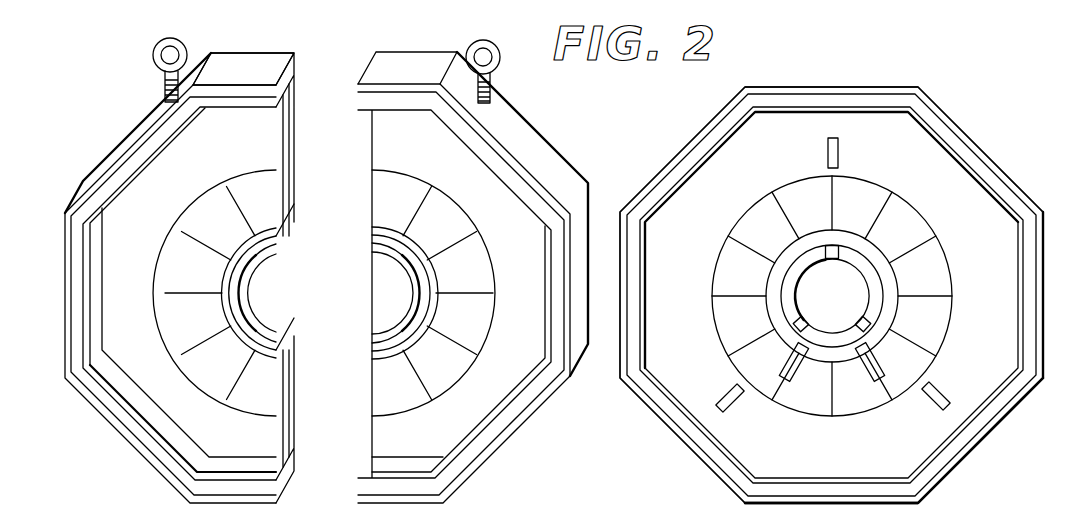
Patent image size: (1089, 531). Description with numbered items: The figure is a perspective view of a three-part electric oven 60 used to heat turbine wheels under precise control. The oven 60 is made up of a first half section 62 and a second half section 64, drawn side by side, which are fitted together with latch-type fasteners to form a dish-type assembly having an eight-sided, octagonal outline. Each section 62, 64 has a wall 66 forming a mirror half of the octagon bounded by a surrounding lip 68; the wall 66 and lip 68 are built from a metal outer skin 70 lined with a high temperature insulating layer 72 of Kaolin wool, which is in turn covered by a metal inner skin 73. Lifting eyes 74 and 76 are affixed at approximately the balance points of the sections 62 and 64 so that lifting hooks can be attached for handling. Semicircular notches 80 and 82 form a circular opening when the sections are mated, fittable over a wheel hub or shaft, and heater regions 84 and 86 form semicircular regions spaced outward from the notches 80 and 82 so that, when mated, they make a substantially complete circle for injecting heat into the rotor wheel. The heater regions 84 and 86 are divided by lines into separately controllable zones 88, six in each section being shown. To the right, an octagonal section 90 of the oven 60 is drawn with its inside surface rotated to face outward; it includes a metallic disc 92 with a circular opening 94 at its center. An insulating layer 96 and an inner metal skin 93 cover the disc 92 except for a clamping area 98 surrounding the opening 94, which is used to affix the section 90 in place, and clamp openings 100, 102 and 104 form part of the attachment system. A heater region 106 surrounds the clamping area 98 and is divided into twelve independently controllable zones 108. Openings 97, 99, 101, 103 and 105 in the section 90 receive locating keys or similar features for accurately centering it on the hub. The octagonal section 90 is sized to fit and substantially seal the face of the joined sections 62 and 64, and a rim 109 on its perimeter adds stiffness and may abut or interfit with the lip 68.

The electric oven 60 is at (982, 131).
The first 180-degree section 62 is at (243, 53).
The second 180-degree section 64 is at (411, 53).
The wall 66 is at (262, 120).
The lip 68 is at (273, 66).
The metal outer skin 70 is at (296, 135).
The insulating layer 72 is at (291, 154).
The metal inner skin 73 is at (284, 190).
The lifting eye 74 is at (152, 58).
The lifting eye 76 is at (508, 60).
The semicircular notch 80 is at (273, 310).
The semicircular notch 82 is at (415, 318).
The heater region 84 is at (167, 271).
The heater region 86 is at (470, 356).
The separately controllable zones 88 is at (215, 217).
The octagonal section 90 is at (698, 142).
The metallic disc 92 is at (1036, 276).
The inner metal skin 93 is at (1022, 328).
The circular opening 94 is at (798, 296).
The insulating layer 96 is at (1040, 357).
The opening 97 is at (869, 387).
The clamping area 98 is at (875, 290).
The opening 99 is at (790, 387).
The clamp opening 100 is at (833, 246).
The opening 101 is at (826, 146).
The clamp opening 102 is at (868, 320).
The opening 103 is at (950, 388).
The clamp opening 104 is at (796, 320).
The opening 105 is at (732, 410).
The heater region 106 is at (945, 251).
The independently controllable zones 108 is at (897, 214).
The rim 109 is at (988, 433).